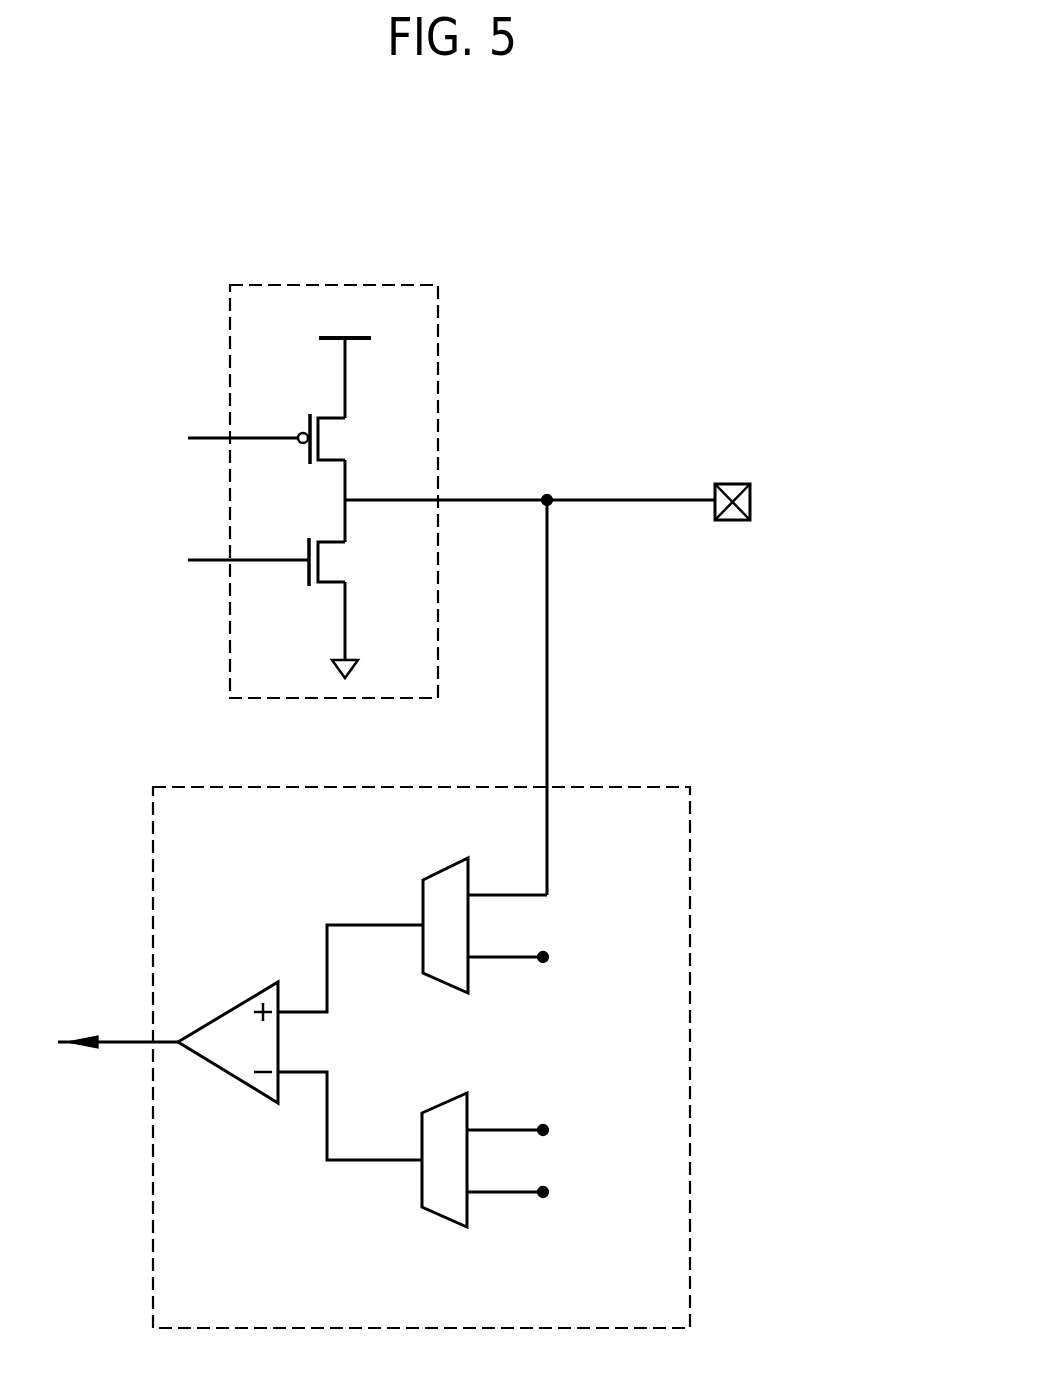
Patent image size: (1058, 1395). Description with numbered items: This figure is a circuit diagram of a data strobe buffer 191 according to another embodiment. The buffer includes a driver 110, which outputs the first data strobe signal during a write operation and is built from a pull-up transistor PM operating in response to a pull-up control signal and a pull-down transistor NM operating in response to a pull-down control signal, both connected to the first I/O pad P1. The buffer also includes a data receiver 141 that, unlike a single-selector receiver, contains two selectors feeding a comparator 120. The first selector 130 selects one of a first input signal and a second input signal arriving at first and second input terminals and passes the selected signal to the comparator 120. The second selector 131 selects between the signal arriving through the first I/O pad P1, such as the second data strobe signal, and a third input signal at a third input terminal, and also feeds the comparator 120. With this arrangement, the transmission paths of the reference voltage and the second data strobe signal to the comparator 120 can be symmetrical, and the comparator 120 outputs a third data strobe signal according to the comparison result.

The data strobe buffer 191 is at (712, 170).
The driver 110 is at (408, 284).
The comparator 120 is at (226, 1014).
The first selector 130 is at (433, 1110).
The second selector 131 is at (425, 878).
The data receiver 141 is at (660, 787).
The first I/O pad P1 is at (750, 500).